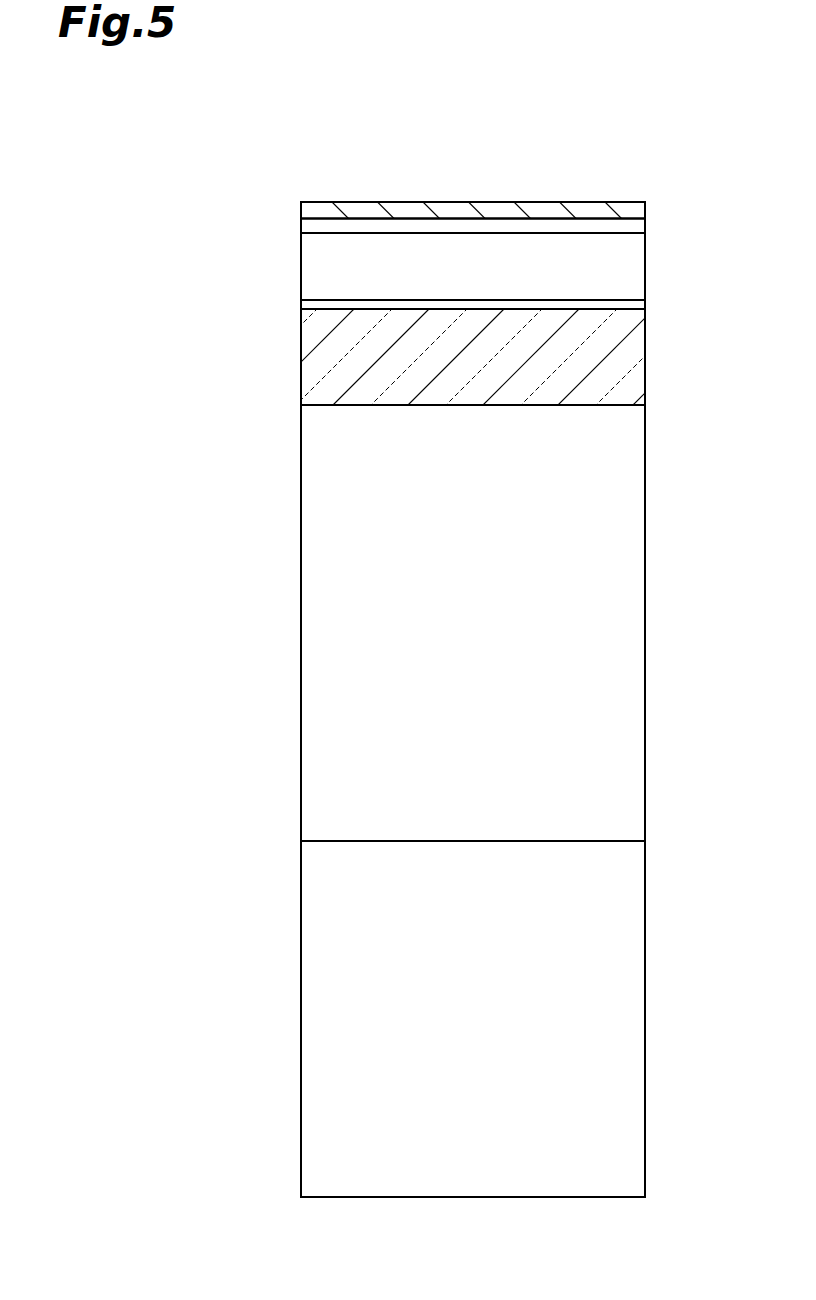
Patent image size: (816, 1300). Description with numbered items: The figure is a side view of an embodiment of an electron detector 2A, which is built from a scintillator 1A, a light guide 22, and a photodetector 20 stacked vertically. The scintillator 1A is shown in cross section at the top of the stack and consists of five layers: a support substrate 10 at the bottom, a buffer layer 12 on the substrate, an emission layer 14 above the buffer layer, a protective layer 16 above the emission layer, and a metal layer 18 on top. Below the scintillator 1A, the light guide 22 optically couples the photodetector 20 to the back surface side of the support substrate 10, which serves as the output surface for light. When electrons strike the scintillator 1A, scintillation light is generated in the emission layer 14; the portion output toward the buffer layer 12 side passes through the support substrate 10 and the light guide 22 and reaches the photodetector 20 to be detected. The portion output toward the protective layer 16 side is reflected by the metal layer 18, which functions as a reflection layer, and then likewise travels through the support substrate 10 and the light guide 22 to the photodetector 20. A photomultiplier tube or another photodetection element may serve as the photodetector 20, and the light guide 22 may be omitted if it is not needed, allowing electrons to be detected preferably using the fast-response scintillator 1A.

The electron detector 2A is at (643, 132).
The scintillator 1A is at (292, 203).
The metal layer 18 is at (537, 208).
The protective layer 16 is at (638, 229).
The emission layer 14 is at (634, 266).
The buffer layer 12 is at (636, 304).
The support substrate 10 is at (636, 378).
The light guide 22 is at (635, 621).
The photodetector 20 is at (636, 1021).